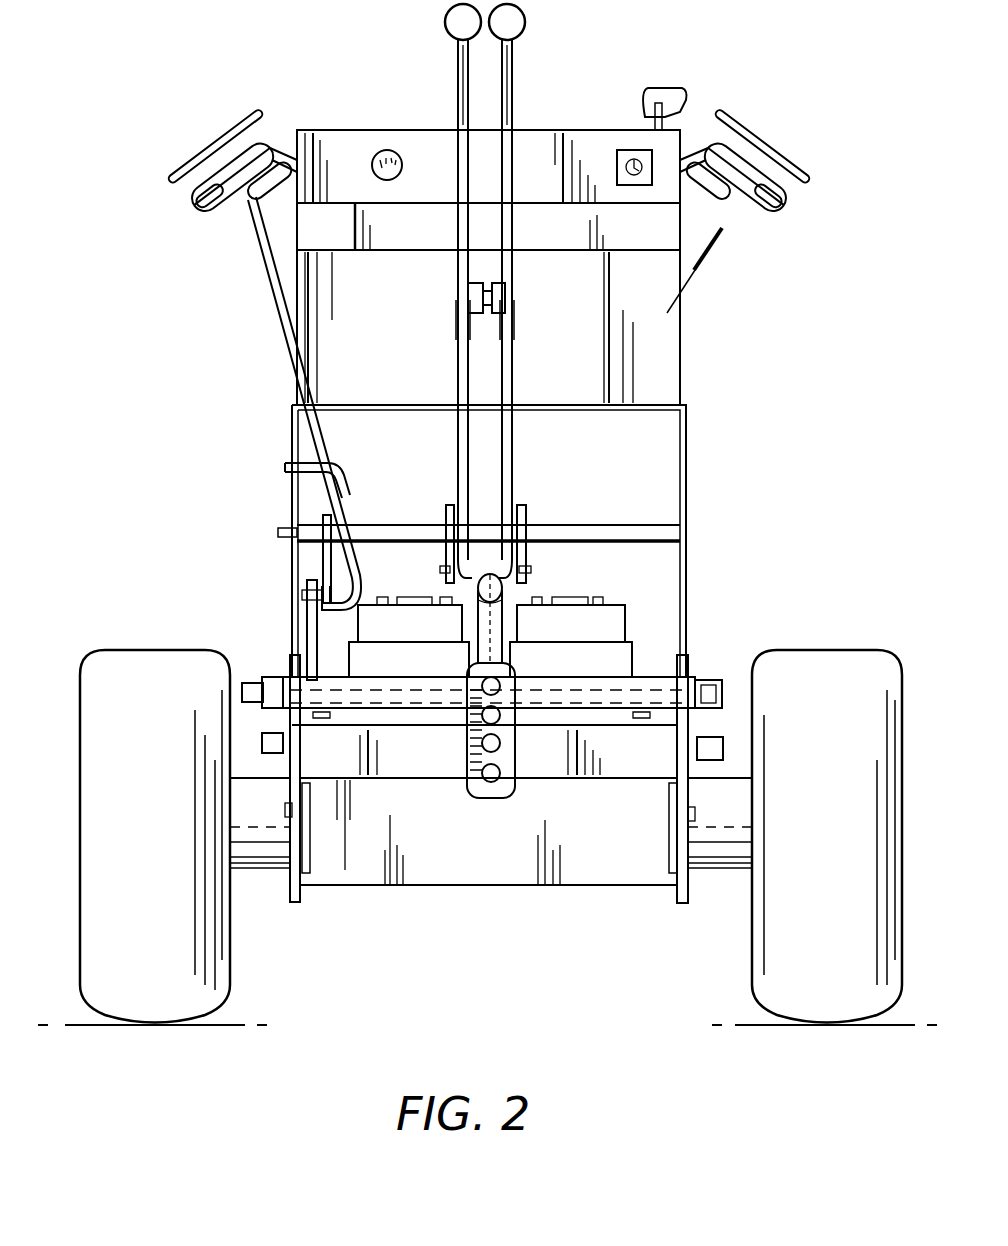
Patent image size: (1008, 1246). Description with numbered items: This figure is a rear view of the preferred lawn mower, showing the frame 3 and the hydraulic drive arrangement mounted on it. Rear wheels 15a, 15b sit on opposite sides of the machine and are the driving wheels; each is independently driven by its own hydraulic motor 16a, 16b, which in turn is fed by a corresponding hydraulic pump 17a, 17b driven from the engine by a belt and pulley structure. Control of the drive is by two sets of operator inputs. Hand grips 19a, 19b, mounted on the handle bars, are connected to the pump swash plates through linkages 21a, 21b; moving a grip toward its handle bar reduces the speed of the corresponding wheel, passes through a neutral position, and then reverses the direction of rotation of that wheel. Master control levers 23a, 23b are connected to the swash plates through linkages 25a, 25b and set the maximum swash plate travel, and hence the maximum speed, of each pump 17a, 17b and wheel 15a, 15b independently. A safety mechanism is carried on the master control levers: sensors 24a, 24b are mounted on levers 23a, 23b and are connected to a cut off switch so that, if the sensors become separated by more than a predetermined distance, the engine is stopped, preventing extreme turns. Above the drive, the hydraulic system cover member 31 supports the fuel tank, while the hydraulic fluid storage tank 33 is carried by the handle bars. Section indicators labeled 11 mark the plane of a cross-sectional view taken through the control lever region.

The frame 3 is at (458, 862).
The section line 11 is at (440, 261).
The rear wheel 15a is at (172, 662).
The rear wheel 15b is at (776, 664).
The hydraulic motor 16a is at (254, 848).
The hydraulic motor 16b is at (724, 848).
The hydraulic pump 17a is at (400, 620).
The hydraulic pump 17b is at (560, 620).
The hand grip 19a is at (204, 228).
The hand grip 19b is at (745, 222).
The linkage 21a is at (281, 357).
The linkage 21b is at (707, 284).
The master control lever 23a is at (458, 70).
The master control lever 23b is at (513, 70).
The sensor 24a is at (470, 296).
The sensor 24b is at (510, 297).
The linkage 25a is at (462, 320).
The linkage 25b is at (514, 325).
The hydraulic system cover member 31 is at (688, 506).
The hydraulic fluid storage tank 33 is at (660, 381).